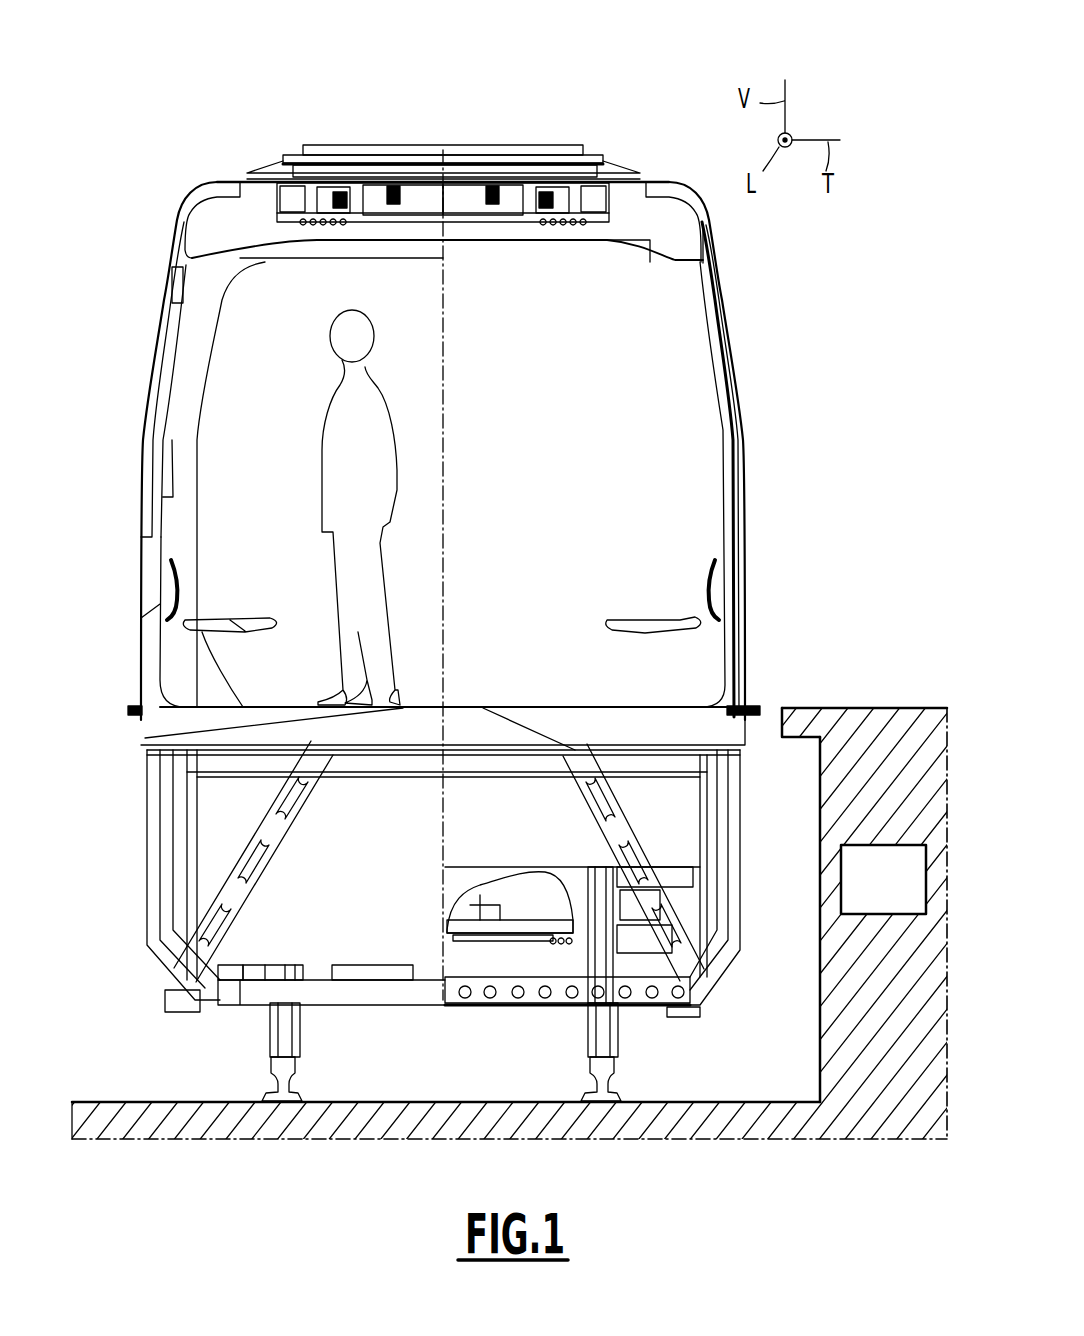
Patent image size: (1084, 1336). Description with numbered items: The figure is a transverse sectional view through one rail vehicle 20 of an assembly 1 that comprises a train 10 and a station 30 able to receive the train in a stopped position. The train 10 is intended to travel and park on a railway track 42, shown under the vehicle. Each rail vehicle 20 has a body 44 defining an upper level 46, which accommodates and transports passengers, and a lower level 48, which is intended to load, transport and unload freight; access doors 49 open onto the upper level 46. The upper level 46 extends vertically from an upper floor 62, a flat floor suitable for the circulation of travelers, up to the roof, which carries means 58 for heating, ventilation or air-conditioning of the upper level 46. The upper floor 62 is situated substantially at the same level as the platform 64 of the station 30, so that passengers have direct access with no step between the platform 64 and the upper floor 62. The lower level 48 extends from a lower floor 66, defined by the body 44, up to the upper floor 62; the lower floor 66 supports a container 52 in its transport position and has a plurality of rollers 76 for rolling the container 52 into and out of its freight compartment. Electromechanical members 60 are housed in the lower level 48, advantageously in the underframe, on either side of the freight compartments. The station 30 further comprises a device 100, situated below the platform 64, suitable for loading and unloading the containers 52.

The assembly 1 is at (199, 96).
The train 10 is at (128, 340).
The rail vehicle 20 is at (128, 440).
The station 30 is at (892, 664).
The railway track 42 is at (273, 1077).
The body 44 is at (147, 572).
The upper level 46 is at (443, 468).
The lower level 48 is at (443, 881).
The access door 49 is at (752, 480).
The container 52 is at (285, 920).
The means for heating, ventilation or air-conditioning 58 is at (477, 176).
The electromechanical members 60 is at (638, 1010).
The upper floor 62 is at (549, 696).
The platform 64 is at (823, 695).
The lower floor 66 is at (423, 958).
The rollers 76 is at (518, 1008).
The device 100 is at (512, 992).